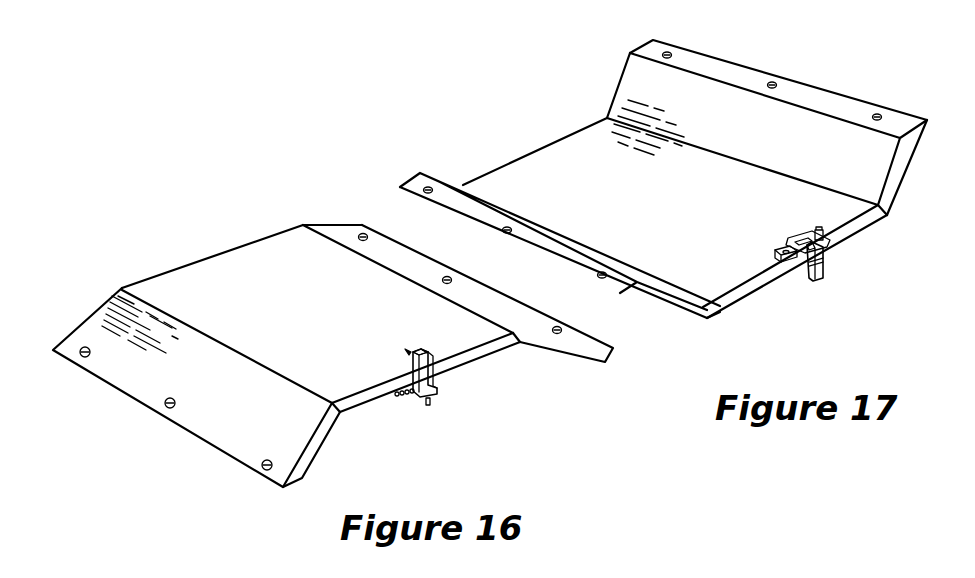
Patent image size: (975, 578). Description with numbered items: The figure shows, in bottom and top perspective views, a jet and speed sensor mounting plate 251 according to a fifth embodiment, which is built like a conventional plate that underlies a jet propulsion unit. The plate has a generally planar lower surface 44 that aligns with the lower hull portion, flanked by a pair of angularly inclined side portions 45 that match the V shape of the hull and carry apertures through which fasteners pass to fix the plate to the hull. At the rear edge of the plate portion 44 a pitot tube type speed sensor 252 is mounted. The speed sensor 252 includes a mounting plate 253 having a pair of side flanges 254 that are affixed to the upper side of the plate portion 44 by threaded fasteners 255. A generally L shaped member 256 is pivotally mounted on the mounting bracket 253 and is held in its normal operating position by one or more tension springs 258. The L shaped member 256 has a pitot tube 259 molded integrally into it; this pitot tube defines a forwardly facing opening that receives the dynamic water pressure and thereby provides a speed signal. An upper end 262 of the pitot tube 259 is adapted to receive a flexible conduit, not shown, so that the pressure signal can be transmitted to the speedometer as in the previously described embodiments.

In FIG. 16, the lower surface 44 is at (220, 278).
In FIG. 17, the lower surface 44 is at (577, 150).
In FIG. 16, the side portions 45 is at (218, 425).
In FIG. 17, the side portions 45 is at (637, 80).
In FIG. 16, the jet and speed sensor mounting plate 251 is at (228, 234).
In FIG. 17, the jet and speed sensor mounting plate 251 is at (746, 316).
In FIG. 16, the speed sensor 252 is at (440, 382).
In FIG. 17, the speed sensor 252 is at (846, 260).
In FIG. 17, the mounting plate 253 is at (797, 242).
In FIG. 17, the side flanges 254 is at (773, 258).
In FIG. 17, the threaded fasteners 255 is at (790, 250).
In FIG. 16, the L shaped member 256 is at (420, 352).
In FIG. 16, the tension springs 258 is at (412, 393).
In FIG. 17, the tension springs 258 is at (813, 278).
In FIG. 16, the pitot tube 259 is at (408, 350).
In FIG. 16, the upper end 262 is at (427, 407).
In FIG. 17, the upper end 262 is at (820, 230).